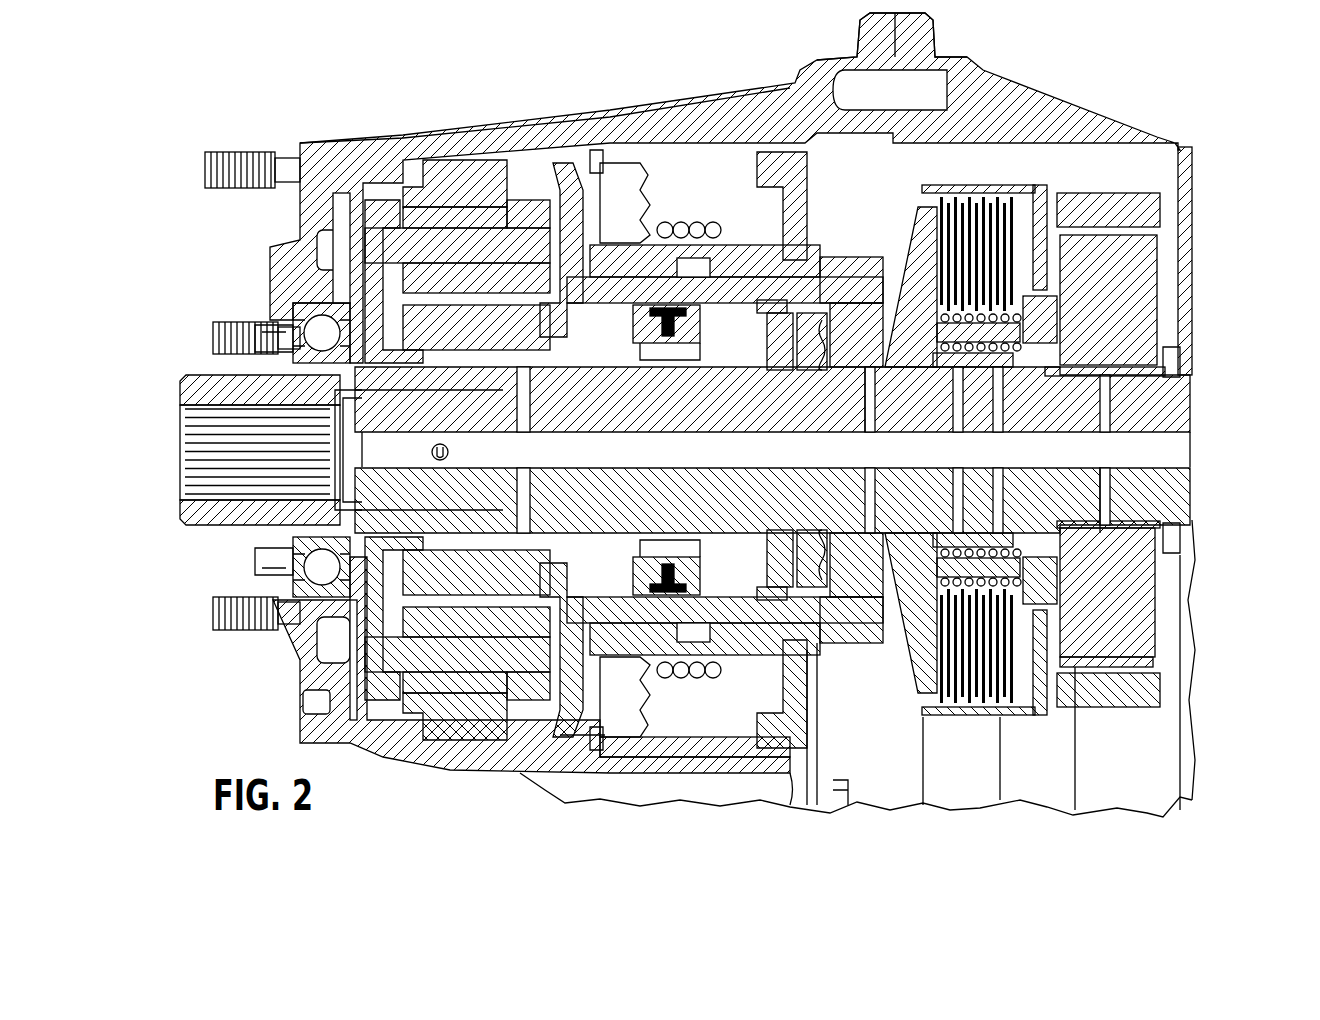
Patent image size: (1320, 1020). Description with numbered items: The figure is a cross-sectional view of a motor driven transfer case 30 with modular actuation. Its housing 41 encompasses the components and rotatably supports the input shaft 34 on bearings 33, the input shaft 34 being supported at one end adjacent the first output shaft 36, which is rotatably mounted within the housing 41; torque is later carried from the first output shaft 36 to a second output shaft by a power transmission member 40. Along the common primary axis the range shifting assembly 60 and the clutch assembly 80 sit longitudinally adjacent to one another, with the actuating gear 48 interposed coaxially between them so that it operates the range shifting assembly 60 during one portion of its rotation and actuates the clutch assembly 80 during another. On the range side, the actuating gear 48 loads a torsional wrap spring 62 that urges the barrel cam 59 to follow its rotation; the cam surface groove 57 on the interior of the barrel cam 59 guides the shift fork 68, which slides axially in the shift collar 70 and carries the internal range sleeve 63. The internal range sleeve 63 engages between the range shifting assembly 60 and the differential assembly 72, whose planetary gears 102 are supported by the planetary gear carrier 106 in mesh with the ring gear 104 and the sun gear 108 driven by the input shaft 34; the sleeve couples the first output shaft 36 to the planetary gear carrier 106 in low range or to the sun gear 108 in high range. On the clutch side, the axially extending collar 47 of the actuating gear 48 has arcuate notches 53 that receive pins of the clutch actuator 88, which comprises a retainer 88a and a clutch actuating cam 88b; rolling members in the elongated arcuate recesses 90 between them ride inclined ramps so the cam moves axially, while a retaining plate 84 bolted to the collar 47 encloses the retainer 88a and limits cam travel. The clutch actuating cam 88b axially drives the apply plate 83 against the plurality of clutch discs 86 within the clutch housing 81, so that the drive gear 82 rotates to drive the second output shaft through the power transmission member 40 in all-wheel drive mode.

The transfer case 30 is at (270, 125).
The bearings 33 is at (320, 567).
The input shaft 34 is at (205, 385).
The first output shaft 36 is at (408, 452).
The power transmission member 40 is at (1143, 752).
The housing 41 is at (1000, 117).
The axially extending collar 47 is at (985, 257).
The actuating gear 48 is at (780, 187).
The arcuate notch 53 is at (985, 350).
The cam surface groove 57 is at (692, 632).
The barrel cam 59 is at (727, 647).
The range shifting assembly 60 is at (607, 300).
The torsional wrap spring 62 is at (617, 603).
The internal range sleeve 63 is at (590, 355).
The shift fork 68 is at (668, 200).
The shift collar 70 is at (603, 733).
The differential assembly 72 is at (463, 178).
The clutch assembly 80 is at (971, 728).
The clutch housing 81 is at (1060, 226).
The drive gear 82 is at (1120, 270).
The apply plate 83 is at (860, 263).
The retaining plate 84 is at (1045, 310).
The clutch discs 86 is at (1050, 290).
The clutch actuator 88 is at (833, 614).
The retainer 88a is at (815, 362).
The clutch actuating cam 88b is at (1010, 375).
The elongated arcuate recesses 90 is at (990, 366).
The planetary gears 102 is at (430, 212).
The ring gear 104 is at (460, 188).
The planetary gear carrier 106 is at (392, 200).
The sun gear 108 is at (470, 277).